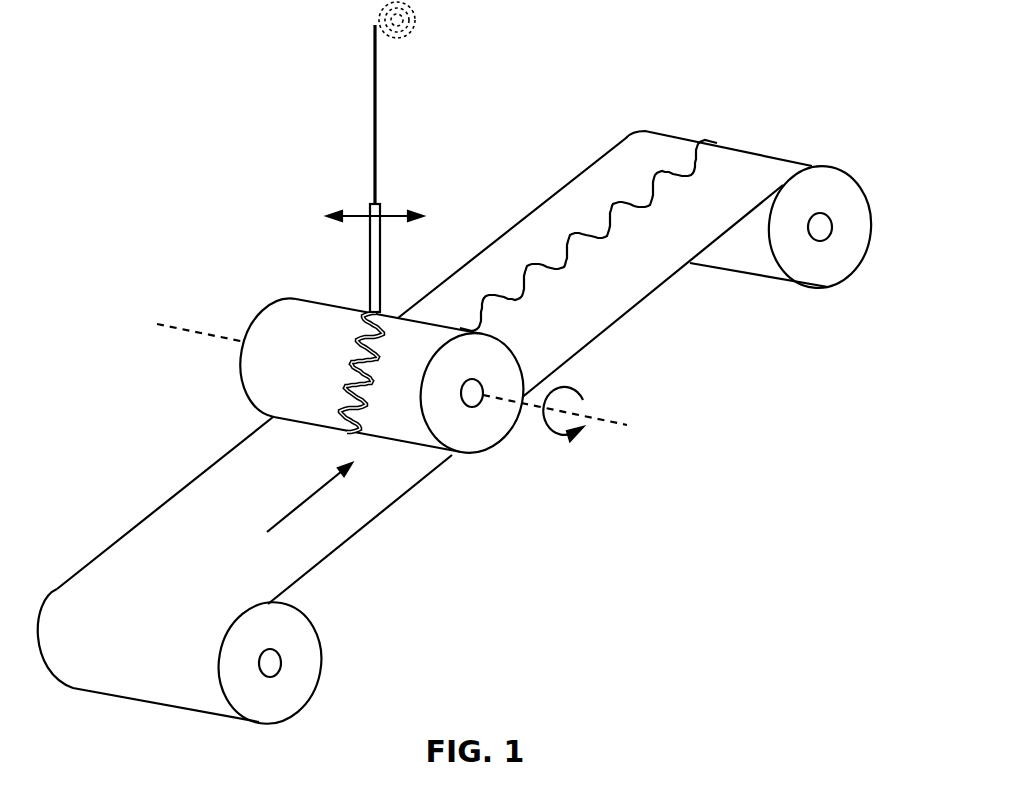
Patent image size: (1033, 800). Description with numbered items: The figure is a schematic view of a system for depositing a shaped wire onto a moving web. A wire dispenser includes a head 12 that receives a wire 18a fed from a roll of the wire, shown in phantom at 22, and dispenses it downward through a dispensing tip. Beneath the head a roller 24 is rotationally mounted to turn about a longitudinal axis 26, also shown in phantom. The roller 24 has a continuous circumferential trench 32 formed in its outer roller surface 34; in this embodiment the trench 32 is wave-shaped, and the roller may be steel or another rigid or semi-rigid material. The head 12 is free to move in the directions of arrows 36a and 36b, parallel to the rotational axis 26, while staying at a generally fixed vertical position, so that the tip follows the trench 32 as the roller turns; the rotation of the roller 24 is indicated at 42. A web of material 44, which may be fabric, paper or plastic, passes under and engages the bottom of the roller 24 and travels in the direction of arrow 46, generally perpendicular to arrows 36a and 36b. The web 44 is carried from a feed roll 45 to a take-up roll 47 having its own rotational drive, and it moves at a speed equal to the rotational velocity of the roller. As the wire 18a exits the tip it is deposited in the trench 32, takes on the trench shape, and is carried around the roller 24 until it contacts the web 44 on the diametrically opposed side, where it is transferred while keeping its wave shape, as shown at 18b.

The head 12 is at (368, 253).
The wire 18a is at (373, 78).
The transferred wire 18b is at (580, 253).
The roll of the wire 22 is at (417, 22).
The roller 24 is at (488, 423).
The longitudinal axis 26 is at (610, 423).
The trench 32 is at (357, 380).
The outer roller surface 34 is at (293, 328).
The arrow 36a is at (357, 216).
The arrow 36b is at (388, 216).
The drum rotation direction 42 is at (572, 383).
The web of material 44 is at (295, 578).
The feed roll 45 is at (303, 660).
The arrow 46 is at (313, 498).
The take-up roll 47 is at (842, 250).